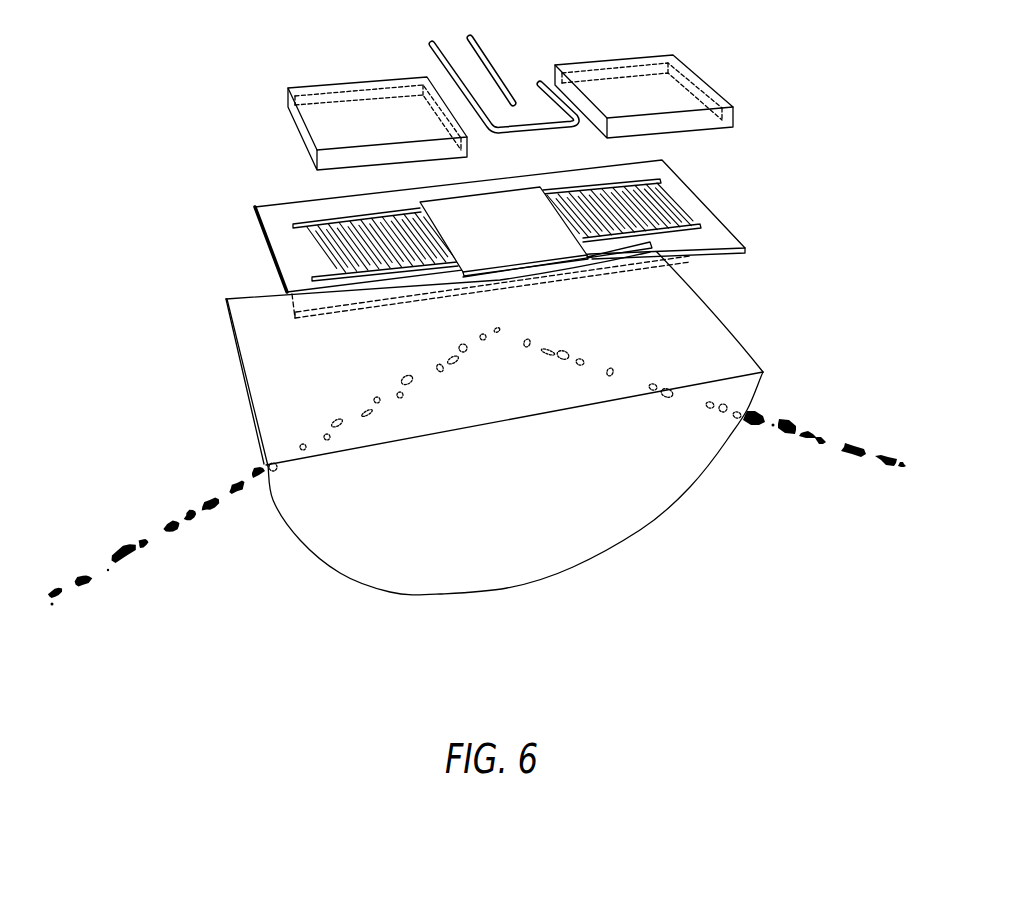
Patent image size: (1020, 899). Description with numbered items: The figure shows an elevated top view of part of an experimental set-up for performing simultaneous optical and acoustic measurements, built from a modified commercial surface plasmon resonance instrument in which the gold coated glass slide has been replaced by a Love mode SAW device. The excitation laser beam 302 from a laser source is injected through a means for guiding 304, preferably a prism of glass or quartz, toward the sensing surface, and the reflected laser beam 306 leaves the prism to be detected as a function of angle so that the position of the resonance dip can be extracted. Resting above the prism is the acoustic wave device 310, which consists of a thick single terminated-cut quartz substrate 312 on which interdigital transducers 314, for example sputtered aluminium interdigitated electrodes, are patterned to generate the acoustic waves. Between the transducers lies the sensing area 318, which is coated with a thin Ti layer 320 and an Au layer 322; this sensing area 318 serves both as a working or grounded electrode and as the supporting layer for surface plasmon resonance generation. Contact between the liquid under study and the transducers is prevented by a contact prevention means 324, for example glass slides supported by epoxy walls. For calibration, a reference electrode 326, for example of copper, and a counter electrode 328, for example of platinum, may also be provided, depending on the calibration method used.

The excitation laser beam 302 is at (137, 560).
The means for guiding 304 is at (267, 392).
The reflected laser beam 306 is at (800, 445).
The acoustic wave device 310 is at (468, 236).
The quartz substrate 312 is at (293, 258).
The interdigital transducers 314 is at (630, 212).
The sensing area 318 is at (510, 200).
The Ti layer 320 is at (527, 266).
The Au layer 322 is at (643, 248).
The contact prevention means 324 is at (650, 102).
The reference electrode 326 is at (480, 60).
The counter electrode 328 is at (430, 43).